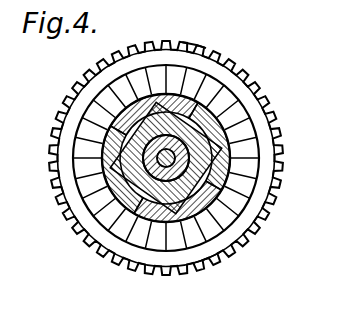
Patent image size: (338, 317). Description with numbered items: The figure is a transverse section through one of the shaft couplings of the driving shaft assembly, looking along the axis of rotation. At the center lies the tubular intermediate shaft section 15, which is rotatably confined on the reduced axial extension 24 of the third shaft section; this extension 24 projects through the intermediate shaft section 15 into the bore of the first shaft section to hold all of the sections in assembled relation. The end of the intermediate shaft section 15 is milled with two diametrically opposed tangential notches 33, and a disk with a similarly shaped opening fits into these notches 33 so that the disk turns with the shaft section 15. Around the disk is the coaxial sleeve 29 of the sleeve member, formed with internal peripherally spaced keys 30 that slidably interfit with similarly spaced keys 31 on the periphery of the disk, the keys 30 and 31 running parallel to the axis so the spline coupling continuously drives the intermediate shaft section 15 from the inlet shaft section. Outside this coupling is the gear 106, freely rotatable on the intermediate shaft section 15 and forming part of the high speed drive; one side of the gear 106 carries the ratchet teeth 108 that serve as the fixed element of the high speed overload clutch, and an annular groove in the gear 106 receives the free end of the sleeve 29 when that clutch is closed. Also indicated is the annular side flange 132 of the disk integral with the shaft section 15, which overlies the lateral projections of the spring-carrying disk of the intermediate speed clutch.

The intermediate shaft section 15 is at (222, 118).
The reduced axial extension 24 is at (128, 248).
The coaxial sleeve 29 is at (205, 90).
The internal keys 30 is at (230, 138).
The peripheral keys 31 is at (253, 150).
The tangential notches 33 is at (112, 112).
The gear 106 is at (191, 53).
The ratchet teeth 108 is at (195, 78).
The annular side flange 132 is at (203, 252).